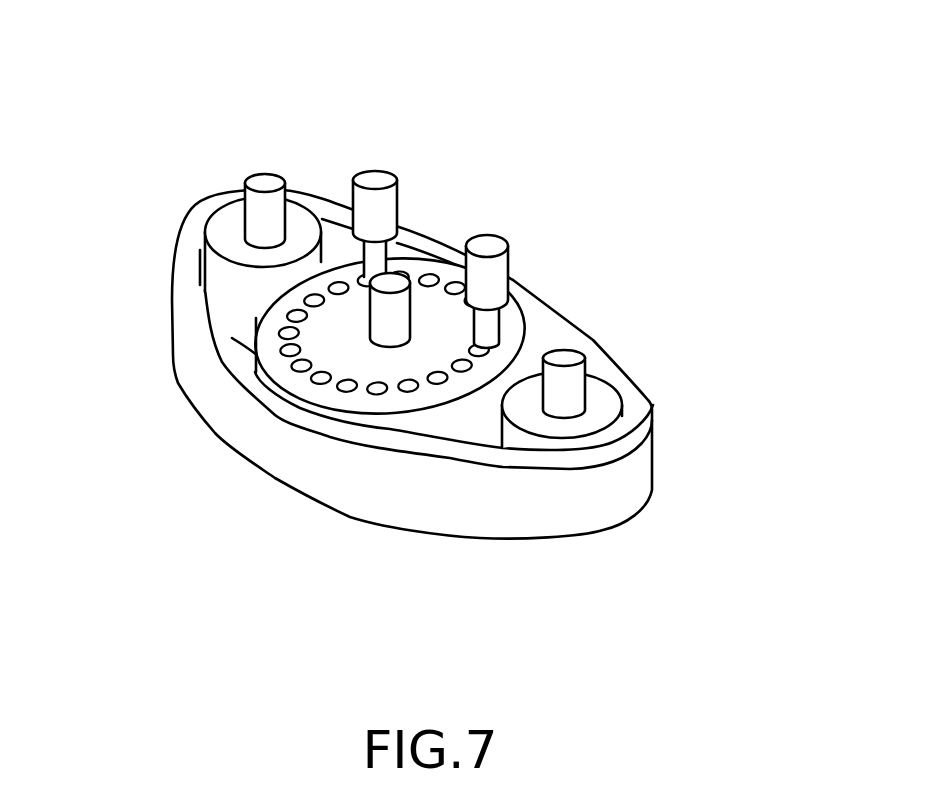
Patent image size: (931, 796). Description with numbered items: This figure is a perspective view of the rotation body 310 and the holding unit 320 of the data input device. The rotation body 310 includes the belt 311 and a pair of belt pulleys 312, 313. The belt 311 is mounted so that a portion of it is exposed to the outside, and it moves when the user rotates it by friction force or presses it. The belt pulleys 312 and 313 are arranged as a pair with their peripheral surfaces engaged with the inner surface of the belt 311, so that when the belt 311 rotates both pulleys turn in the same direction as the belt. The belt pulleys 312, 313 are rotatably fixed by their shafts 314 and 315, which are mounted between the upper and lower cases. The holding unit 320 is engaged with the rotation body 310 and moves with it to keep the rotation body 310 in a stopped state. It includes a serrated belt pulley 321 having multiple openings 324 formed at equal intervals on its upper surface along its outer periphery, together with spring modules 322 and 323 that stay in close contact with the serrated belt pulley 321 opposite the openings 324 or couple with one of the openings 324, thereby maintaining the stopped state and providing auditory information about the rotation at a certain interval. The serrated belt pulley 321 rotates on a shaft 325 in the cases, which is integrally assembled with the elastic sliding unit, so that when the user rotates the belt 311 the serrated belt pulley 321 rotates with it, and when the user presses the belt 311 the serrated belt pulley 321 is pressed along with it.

The rotation body 310 is at (442, 325).
The belt 311 is at (553, 502).
The belt pulley 312 is at (597, 417).
The belt pulley 313 is at (228, 227).
The shaft 314 is at (567, 357).
The shaft 315 is at (265, 183).
The holding unit 320 is at (542, 184).
The serrated belt pulley 321 is at (340, 345).
The spring module 322 is at (493, 247).
The spring module 323 is at (378, 178).
The openings 324 is at (375, 388).
The shaft 325 is at (398, 281).